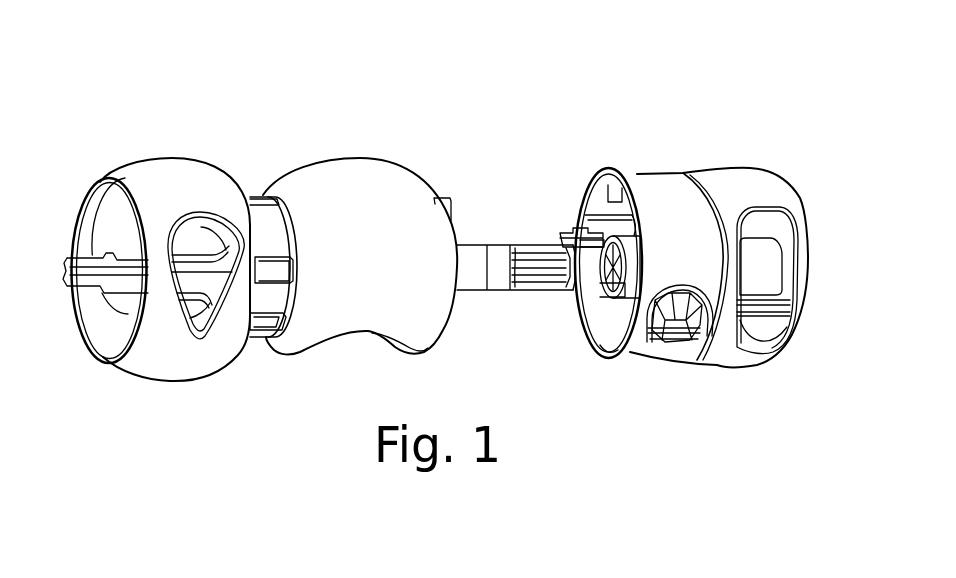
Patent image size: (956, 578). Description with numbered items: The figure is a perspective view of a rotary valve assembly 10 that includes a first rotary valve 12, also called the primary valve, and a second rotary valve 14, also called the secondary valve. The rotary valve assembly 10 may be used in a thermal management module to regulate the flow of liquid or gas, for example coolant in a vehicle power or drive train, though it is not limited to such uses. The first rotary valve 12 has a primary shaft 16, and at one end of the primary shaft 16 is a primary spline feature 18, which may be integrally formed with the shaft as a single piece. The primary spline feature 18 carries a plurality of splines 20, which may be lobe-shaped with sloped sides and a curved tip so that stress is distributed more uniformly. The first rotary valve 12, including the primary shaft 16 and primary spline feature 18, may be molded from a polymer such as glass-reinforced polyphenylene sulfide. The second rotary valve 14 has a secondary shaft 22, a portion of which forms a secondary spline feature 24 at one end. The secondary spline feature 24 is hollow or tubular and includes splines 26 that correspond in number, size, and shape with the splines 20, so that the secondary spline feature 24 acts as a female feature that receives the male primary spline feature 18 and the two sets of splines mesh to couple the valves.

The rotary valve assembly 10 is at (536, 81).
The first rotary valve 12 is at (260, 206).
The second rotary valve 14 is at (691, 202).
The primary shaft 16 is at (516, 324).
The primary spline feature 18 is at (566, 202).
The splines 20 is at (541, 317).
The secondary shaft 22 is at (643, 193).
The secondary spline feature 24 is at (600, 346).
The splines 26 is at (583, 171).